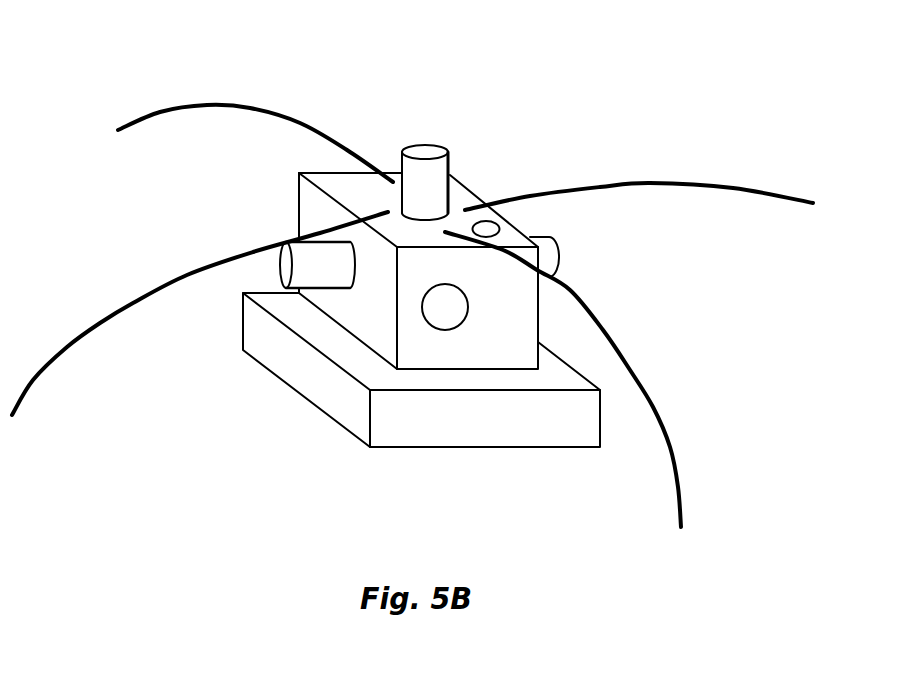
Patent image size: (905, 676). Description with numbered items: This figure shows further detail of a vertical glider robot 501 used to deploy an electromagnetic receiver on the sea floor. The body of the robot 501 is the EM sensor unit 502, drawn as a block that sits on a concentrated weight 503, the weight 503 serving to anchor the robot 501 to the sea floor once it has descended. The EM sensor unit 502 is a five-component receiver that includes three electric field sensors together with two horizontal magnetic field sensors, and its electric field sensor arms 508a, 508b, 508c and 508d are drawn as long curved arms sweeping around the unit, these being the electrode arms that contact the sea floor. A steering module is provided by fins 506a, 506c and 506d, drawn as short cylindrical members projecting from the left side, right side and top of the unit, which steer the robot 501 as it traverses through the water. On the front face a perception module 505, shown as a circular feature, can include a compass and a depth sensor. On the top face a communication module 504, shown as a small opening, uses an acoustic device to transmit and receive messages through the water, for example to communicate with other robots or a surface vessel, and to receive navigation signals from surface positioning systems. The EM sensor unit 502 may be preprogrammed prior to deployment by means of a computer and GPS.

The vertical glider robot 501 is at (321, 480).
The EM sensor unit 502 is at (187, 155).
The concentrated weight 503 is at (433, 435).
The communication module 504 is at (490, 229).
The perception module 505 is at (445, 313).
The fin 506a is at (287, 262).
The fin 506c is at (552, 258).
The fin 506d is at (433, 172).
The electric field sensor arm 508a is at (662, 187).
The electric field sensor arm 508b is at (297, 123).
The electric field sensor arm 508c is at (67, 346).
The electric field sensor arm 508d is at (618, 345).